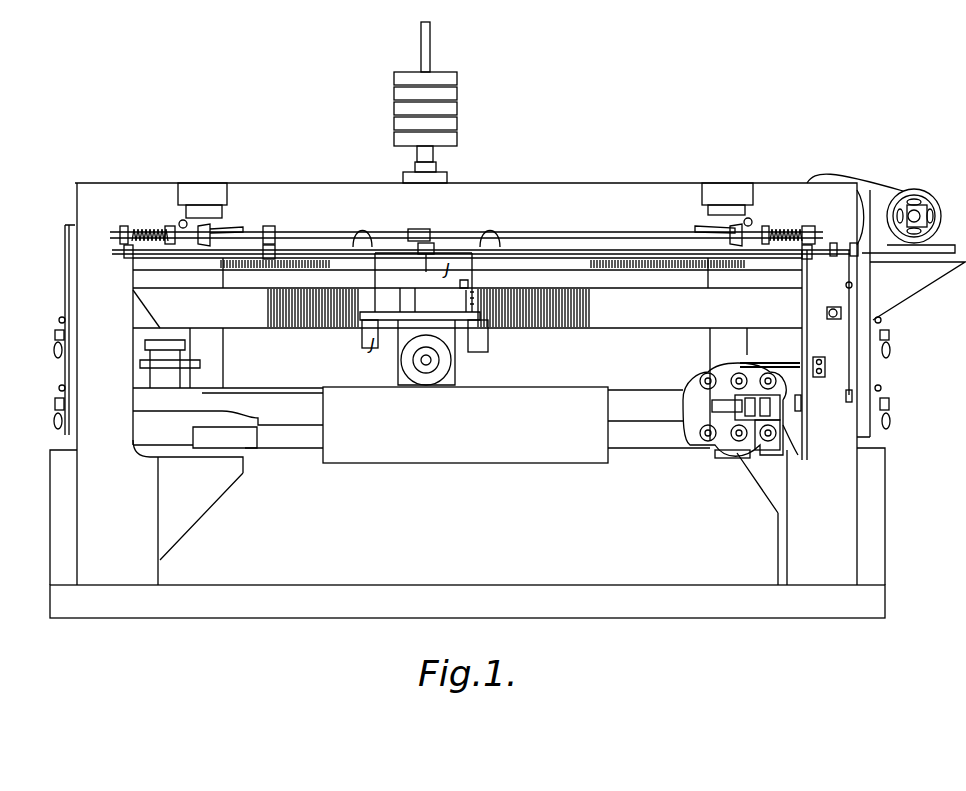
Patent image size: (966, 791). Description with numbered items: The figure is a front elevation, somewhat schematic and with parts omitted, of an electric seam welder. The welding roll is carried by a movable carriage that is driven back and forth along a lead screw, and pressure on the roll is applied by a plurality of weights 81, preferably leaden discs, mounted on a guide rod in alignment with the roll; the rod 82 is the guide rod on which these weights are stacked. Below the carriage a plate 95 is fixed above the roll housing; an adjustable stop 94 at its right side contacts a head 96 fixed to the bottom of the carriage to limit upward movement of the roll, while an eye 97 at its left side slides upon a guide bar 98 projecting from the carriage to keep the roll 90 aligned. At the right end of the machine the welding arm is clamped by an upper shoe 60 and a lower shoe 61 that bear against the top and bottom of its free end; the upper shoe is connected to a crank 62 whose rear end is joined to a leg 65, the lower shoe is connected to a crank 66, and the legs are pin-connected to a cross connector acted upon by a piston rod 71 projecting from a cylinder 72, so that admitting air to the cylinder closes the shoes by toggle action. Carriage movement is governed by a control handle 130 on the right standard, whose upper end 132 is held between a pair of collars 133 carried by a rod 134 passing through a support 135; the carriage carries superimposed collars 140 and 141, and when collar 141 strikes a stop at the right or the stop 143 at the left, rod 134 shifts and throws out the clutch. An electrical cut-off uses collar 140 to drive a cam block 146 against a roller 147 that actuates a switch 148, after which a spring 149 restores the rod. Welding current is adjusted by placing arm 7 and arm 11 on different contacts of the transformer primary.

The weight rod 82 is at (430, 50).
The weights 81 is at (457, 80).
The stop 143 is at (270, 226).
The collar 140 is at (420, 229).
The collar 141 is at (434, 248).
The switch 148 is at (724, 216).
The roller 147 is at (742, 230).
The spring 149 is at (790, 226).
The cam block 146 is at (715, 233).
The collars 133 is at (840, 238).
The upper end 132 is at (856, 243).
The rod 134 is at (785, 260).
The support 135 is at (830, 256).
The guide bar 98 is at (385, 292).
The plate 95 is at (392, 312).
The head 96 is at (470, 282).
The adjustable stop 94 is at (457, 297).
The eye 97 is at (362, 334).
The roller 90 is at (426, 352).
The upper shoe 60 is at (690, 380).
The lower shoe 61 is at (692, 428).
The crank 62 is at (725, 370).
The leg 65 is at (790, 362).
The crank 66 is at (722, 458).
The piston rod 71 is at (798, 455).
The cylinder 72 is at (812, 412).
The control handle 130 is at (847, 400).
The arm 7 is at (58, 320).
The arm 11 is at (58, 388).